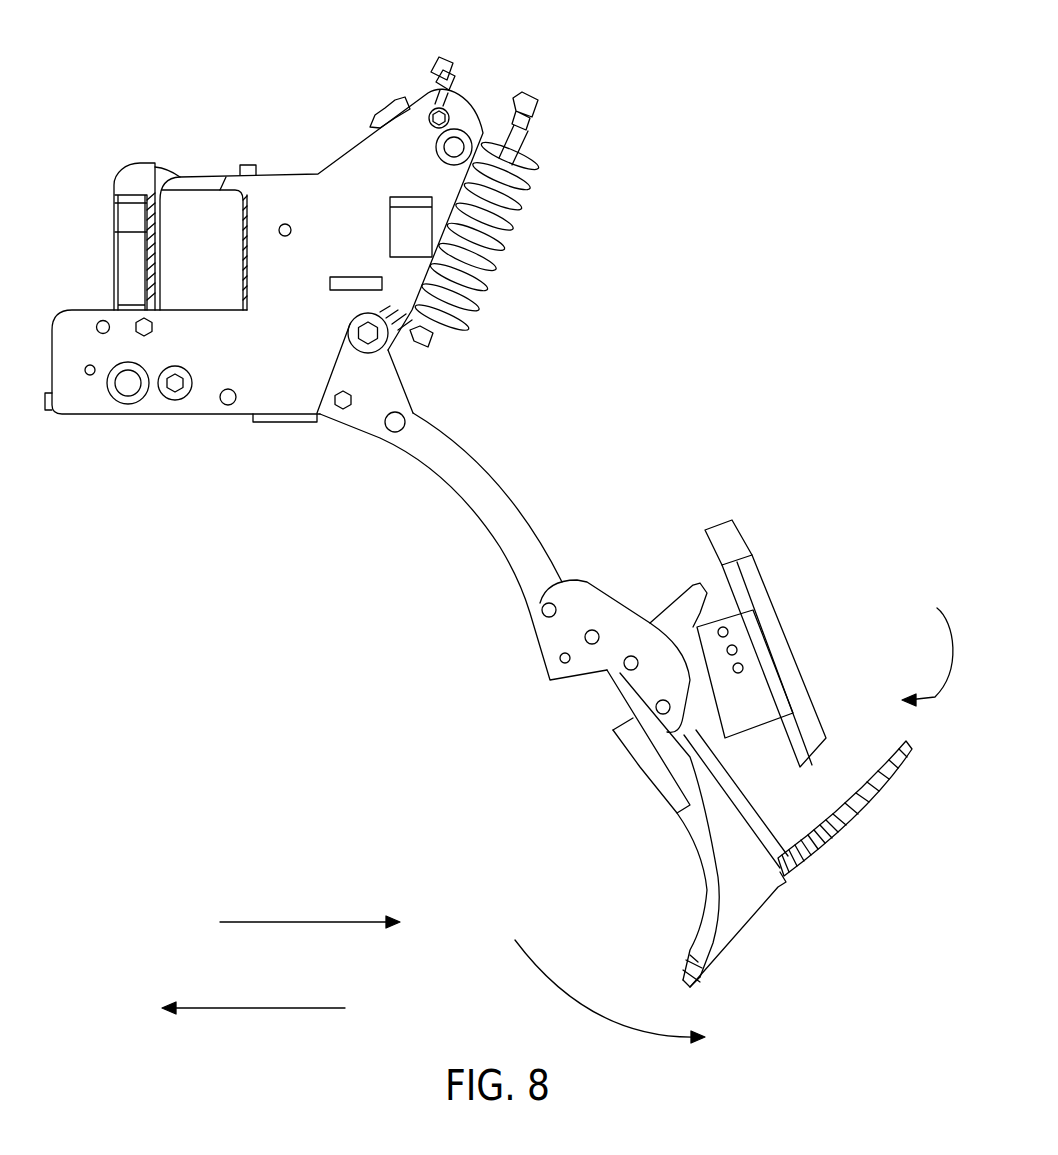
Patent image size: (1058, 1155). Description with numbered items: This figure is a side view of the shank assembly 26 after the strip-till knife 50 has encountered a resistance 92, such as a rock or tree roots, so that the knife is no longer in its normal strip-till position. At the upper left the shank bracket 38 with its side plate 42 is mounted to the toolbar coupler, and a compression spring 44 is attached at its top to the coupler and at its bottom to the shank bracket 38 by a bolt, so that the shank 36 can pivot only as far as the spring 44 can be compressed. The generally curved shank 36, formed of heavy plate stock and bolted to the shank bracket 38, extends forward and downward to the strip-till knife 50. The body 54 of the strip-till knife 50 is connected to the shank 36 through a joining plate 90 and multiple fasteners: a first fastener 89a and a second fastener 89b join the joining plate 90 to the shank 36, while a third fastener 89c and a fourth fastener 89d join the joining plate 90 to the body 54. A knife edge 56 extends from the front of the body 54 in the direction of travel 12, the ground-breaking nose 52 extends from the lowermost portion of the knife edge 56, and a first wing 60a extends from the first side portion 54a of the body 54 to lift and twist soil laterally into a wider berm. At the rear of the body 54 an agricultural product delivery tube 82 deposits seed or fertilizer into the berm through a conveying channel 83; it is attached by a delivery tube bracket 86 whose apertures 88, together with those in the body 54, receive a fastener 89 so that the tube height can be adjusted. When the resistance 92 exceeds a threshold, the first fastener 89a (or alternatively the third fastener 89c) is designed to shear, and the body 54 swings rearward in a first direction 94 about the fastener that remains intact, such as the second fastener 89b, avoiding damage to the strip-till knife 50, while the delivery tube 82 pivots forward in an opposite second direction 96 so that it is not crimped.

The shank assembly 26 is at (680, 113).
The side plate 42 is at (330, 183).
The compression spring 44 is at (497, 238).
The shank bracket 38 is at (385, 380).
The shank 36 is at (497, 493).
The joining plate 90 is at (617, 617).
The first fastener 89a is at (592, 645).
The second fastener 89b is at (545, 615).
The third fastener 89c is at (628, 672).
The fourth fastener 89d is at (663, 715).
The strip-till knife 50 is at (576, 827).
The body 54 is at (676, 632).
The first side portion 54a is at (803, 797).
The knife edge 56 is at (702, 883).
The nose 52 is at (681, 975).
The first wing 60a is at (857, 805).
The agricultural product delivery tube 82 is at (847, 641).
The conveying channel 83 is at (727, 538).
The apertures 88 is at (729, 632).
The fastener 89 is at (738, 650).
The delivery tube bracket 86 is at (777, 693).
The second direction 96 is at (947, 693).
The first direction 94 is at (567, 1000).
The resistance 92 is at (303, 922).
The direction of travel 12 is at (258, 1008).